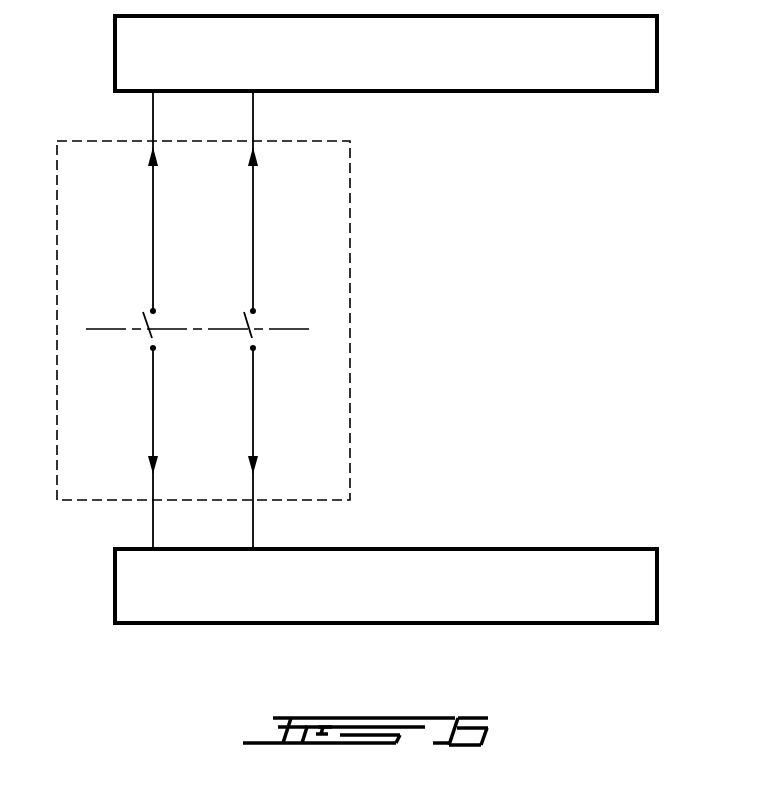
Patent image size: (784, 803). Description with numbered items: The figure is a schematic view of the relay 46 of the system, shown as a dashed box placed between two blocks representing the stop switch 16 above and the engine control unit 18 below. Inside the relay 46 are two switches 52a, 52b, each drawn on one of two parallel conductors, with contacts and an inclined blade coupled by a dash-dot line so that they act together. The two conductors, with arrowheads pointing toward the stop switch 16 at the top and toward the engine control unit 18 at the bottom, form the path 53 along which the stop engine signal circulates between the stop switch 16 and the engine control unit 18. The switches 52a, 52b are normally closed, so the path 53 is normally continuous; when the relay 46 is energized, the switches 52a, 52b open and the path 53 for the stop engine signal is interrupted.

The stop switch 16 is at (658, 50).
The engine control unit 18 is at (658, 587).
The relay 46 is at (351, 409).
The switch 52a is at (150, 340).
The switch 52b is at (247, 322).
The path 53 is at (253, 520).